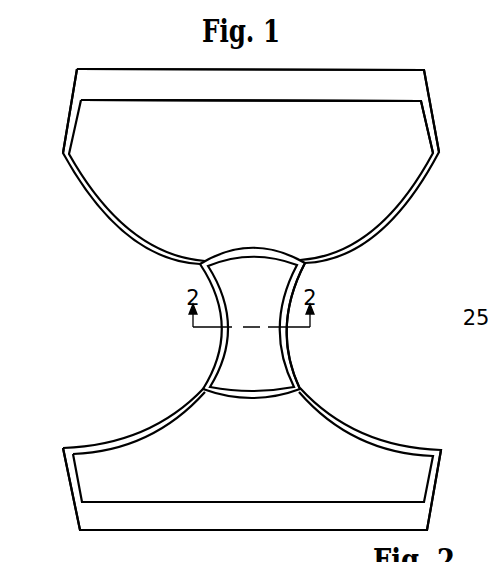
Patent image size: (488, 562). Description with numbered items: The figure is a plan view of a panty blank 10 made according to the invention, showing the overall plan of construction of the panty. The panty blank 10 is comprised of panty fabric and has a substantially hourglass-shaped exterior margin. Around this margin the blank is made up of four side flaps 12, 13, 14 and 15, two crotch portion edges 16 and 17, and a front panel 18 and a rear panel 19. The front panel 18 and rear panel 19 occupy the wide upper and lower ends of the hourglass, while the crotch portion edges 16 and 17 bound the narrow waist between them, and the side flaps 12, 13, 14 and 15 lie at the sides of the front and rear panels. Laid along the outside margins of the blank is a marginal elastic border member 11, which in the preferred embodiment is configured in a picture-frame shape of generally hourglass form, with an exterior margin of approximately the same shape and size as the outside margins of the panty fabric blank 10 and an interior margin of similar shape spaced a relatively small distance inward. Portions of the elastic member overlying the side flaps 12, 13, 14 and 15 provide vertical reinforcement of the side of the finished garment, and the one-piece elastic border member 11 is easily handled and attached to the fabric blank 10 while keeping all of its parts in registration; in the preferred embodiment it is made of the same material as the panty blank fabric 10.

The panty blank 10 is at (263, 148).
The marginal elastic border member 11 is at (433, 136).
The side flap 12 is at (70, 110).
The side flap 13 is at (434, 113).
The side flap 14 is at (437, 497).
The side flap 15 is at (72, 500).
The crotch portion edge 16 is at (219, 350).
The crotch portion edge 17 is at (287, 350).
The front panel 18 is at (326, 112).
The rear panel 19 is at (190, 492).